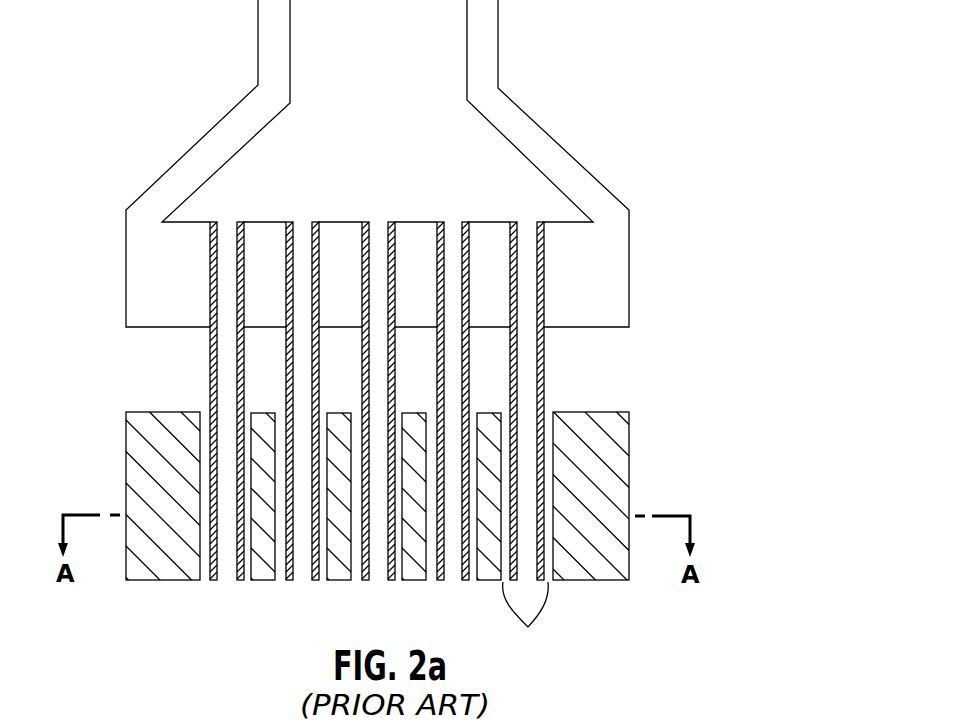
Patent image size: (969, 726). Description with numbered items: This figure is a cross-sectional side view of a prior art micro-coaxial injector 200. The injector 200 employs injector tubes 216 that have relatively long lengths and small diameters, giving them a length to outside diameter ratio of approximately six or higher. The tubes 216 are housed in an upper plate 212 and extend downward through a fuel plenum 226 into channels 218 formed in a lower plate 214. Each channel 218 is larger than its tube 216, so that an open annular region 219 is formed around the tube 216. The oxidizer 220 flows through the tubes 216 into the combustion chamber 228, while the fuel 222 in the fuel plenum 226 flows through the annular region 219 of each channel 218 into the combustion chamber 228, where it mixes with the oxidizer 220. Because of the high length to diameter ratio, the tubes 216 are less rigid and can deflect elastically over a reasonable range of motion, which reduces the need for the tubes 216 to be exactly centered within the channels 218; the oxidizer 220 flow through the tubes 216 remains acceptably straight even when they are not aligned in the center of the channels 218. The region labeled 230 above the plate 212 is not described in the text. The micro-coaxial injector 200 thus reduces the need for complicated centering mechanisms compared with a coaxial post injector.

The micro-coaxial injector 200 is at (588, 90).
The upper plate 212 is at (582, 272).
The lower plate 214 is at (598, 487).
The injector tubes 216 is at (210, 252).
The channels 218 is at (200, 462).
The annular region 219 is at (526, 623).
The oxidizer 220 is at (530, 227).
The fuel 222 is at (553, 400).
The fuel plenum 226 is at (484, 392).
The combustion chamber 228 is at (412, 629).
The inlet plenum 230 is at (399, 116).